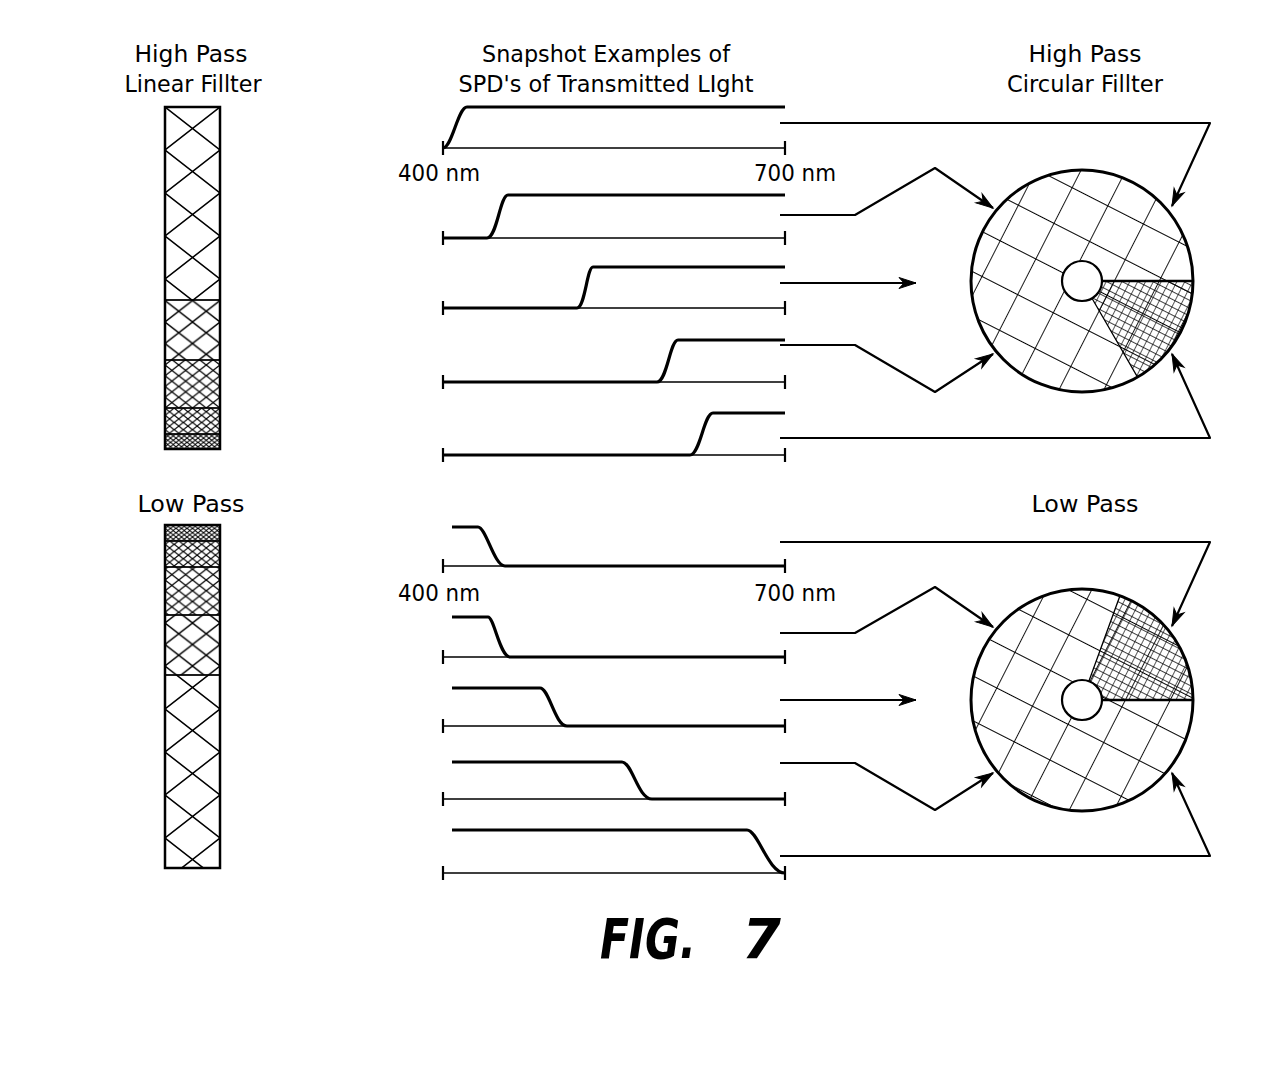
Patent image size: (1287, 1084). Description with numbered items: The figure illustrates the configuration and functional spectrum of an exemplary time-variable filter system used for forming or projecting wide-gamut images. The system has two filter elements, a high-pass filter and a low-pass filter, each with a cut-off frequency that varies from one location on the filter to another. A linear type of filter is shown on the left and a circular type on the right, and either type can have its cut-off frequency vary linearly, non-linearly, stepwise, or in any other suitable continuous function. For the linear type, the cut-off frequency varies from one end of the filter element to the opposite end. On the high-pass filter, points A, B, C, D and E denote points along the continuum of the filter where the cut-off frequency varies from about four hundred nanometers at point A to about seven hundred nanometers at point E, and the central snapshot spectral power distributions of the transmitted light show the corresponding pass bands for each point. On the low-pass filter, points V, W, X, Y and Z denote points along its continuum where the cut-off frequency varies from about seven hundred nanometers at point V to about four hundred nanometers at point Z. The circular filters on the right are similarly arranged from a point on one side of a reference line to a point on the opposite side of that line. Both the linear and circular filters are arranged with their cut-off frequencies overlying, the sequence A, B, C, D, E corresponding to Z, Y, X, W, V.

The point A on high-pass filter A is at (441, 127).
The point B on high-pass filter B is at (452, 215).
The point C on high-pass filter C is at (452, 285).
The point D on high-pass filter D is at (452, 360).
The point E on high-pass filter E is at (452, 433).
The point Z on low-pass filter Z is at (452, 543).
The point Y on low-pass filter Y is at (452, 633).
The point X on low-pass filter X is at (452, 705).
The point W on low-pass filter W is at (452, 778).
The point V on low-pass filter V is at (452, 850).